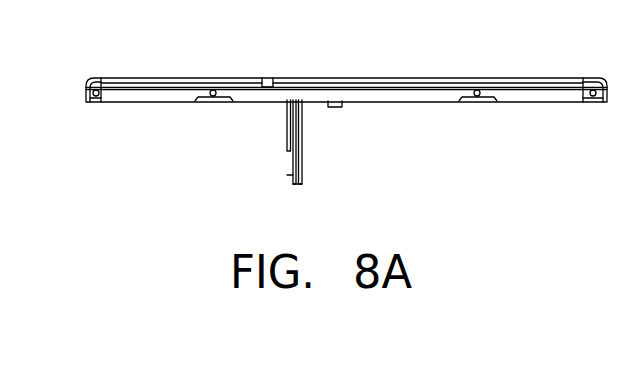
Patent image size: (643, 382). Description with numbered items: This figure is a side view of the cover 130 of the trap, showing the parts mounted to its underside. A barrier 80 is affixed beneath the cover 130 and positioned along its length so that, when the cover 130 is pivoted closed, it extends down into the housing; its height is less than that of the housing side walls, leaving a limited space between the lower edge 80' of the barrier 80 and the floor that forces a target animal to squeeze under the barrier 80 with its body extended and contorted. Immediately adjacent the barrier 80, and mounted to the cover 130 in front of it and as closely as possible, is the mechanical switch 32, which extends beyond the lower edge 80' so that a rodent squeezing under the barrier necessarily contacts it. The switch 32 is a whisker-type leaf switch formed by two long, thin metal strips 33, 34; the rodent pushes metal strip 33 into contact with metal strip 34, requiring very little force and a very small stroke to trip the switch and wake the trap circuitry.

The cover 130 is at (510, 86).
The barrier 80 is at (244, 125).
The lower edge of the barrier 80' is at (249, 142).
The mechanical switch 32 is at (309, 146).
The metal strip 33 is at (305, 164).
The metal strip 34 is at (287, 175).